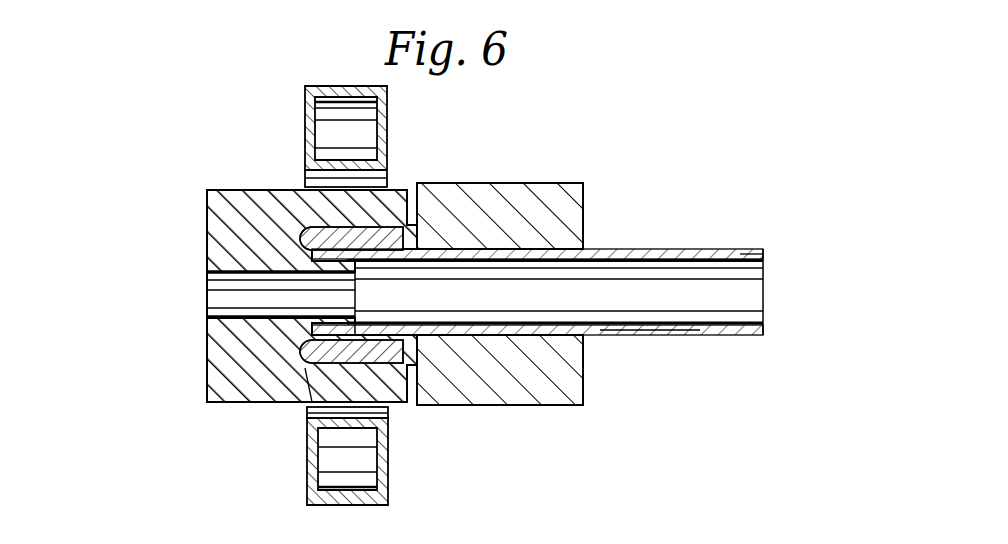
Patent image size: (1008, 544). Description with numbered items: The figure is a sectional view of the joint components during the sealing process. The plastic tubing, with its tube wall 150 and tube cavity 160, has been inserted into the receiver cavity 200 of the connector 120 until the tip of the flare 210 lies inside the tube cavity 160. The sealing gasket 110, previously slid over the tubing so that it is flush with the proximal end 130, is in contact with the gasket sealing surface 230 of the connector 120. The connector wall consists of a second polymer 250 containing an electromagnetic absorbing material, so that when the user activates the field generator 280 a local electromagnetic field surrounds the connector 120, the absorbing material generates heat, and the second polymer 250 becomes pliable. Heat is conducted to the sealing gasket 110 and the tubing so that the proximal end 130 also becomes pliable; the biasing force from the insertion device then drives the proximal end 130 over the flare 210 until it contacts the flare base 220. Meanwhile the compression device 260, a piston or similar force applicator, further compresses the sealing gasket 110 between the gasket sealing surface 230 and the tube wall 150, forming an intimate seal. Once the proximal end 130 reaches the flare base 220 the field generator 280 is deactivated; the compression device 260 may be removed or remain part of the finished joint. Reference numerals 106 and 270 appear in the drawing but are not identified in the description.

The tube 106 is at (652, 249).
The sealing gasket 110 is at (253, 403).
The connector 120 is at (312, 250).
The proximal end 130 is at (305, 368).
The tube wall 150 is at (645, 335).
The tube cavity 160 is at (745, 306).
The receiver cavity 200 is at (207, 216).
The flare 210 is at (303, 235).
The flare base 220 is at (305, 348).
The gasket sealing surface 230 is at (400, 402).
The second polymer 250 is at (207, 262).
The compression device 260 is at (533, 190).
The tube end 270 is at (763, 251).
The field generator 280 is at (323, 110).